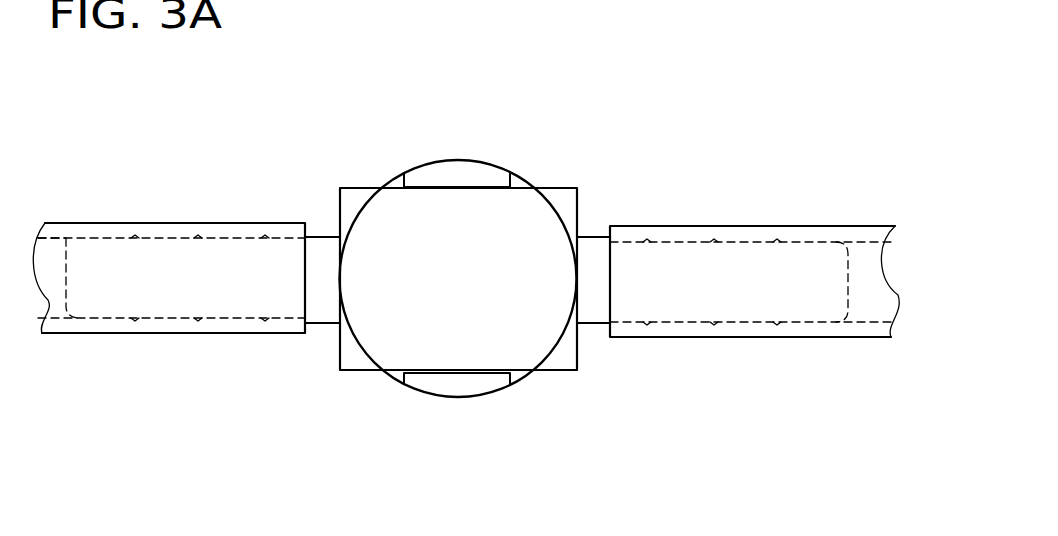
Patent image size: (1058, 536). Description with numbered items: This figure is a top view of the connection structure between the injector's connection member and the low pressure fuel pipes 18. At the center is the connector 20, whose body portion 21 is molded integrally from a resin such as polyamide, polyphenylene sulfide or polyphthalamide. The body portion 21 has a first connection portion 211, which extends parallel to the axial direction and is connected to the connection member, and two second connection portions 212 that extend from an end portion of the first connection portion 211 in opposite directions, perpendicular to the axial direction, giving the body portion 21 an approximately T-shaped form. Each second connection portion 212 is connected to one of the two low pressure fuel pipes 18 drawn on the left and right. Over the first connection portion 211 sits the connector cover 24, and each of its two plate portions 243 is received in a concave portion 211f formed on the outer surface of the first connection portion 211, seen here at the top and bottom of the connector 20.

The low pressure fuel pipe 18 is at (59, 222).
The second connection portion 212 is at (173, 230).
The connector 20 is at (432, 263).
The body portion 21 is at (432, 263).
The first connection portion 211 is at (390, 181).
The concave portion 211f is at (352, 187).
The connector cover 24 is at (472, 161).
The plate portion 243 is at (447, 273).